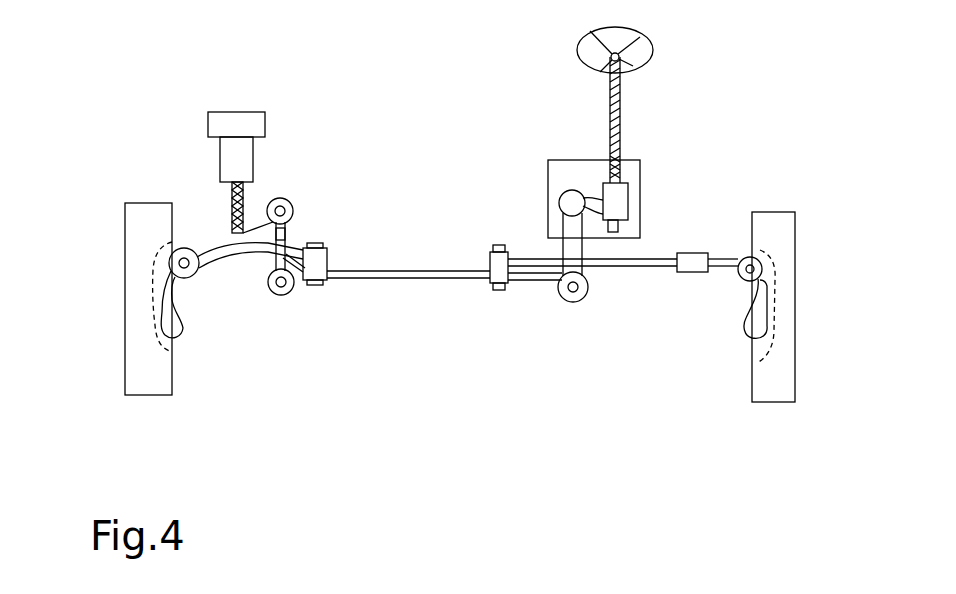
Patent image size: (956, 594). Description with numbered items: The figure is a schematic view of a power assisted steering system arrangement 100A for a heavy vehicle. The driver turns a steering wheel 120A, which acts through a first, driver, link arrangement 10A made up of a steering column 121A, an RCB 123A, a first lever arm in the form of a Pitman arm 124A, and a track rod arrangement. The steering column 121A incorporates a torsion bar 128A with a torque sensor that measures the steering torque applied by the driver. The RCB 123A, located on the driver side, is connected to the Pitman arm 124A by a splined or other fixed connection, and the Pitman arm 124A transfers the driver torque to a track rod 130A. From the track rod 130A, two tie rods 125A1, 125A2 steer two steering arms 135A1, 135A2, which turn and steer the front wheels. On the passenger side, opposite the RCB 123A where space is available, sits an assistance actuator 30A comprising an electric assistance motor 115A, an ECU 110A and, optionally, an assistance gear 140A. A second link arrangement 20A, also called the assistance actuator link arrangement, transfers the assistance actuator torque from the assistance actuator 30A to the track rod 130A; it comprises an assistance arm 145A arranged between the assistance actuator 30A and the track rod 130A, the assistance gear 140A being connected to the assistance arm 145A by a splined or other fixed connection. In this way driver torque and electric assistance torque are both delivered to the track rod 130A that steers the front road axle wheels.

The power assisted steering system arrangement 100A is at (237, 52).
The first link arrangement 10A is at (697, 205).
The second link arrangement 20A is at (392, 183).
The assistance actuator 30A is at (190, 155).
The ECU 110A is at (265, 124).
The electric assistance motor 115A is at (253, 160).
The steering wheel 120A is at (652, 43).
The steering column 121A is at (618, 117).
The RCB 123A is at (641, 187).
The Pitman arm 124A is at (570, 302).
The first tie rod 125A1 is at (653, 267).
The second tie rod 125A2 is at (227, 255).
The torsion bar 128A is at (624, 163).
The track rod 130A is at (400, 278).
The first steering arm 135A1 is at (752, 338).
The second steering arm 135A2 is at (175, 334).
The assistance gear 140A is at (243, 193).
The assistance arm 145A is at (290, 236).